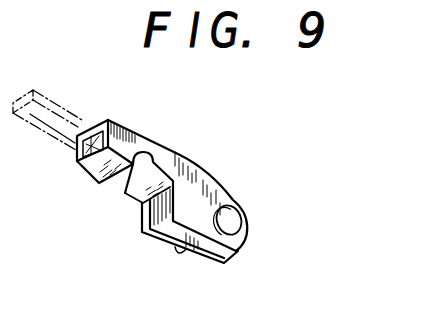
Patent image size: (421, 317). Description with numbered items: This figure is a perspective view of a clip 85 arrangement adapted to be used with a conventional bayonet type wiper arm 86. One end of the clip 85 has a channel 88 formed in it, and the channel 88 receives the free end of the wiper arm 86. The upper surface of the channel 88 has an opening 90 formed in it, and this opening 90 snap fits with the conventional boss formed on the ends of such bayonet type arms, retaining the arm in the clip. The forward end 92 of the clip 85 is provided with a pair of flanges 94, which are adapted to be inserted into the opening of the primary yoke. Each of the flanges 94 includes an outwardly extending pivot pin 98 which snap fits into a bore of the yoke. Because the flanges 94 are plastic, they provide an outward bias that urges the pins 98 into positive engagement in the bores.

The clip 85 is at (165, 108).
The bayonet type wiper arm 86 is at (55, 102).
The channel 88 is at (121, 127).
The opening 90 is at (93, 132).
The forward end 92 is at (197, 182).
The flanges 94 is at (242, 253).
The pivot pin 98 is at (231, 218).